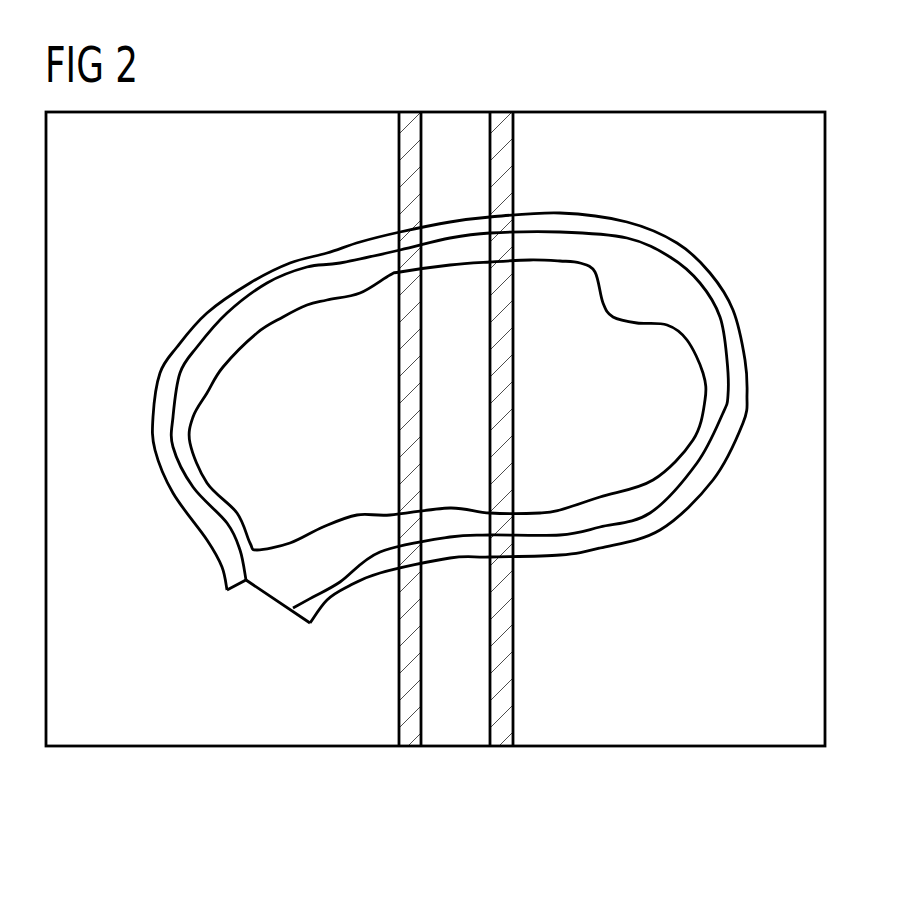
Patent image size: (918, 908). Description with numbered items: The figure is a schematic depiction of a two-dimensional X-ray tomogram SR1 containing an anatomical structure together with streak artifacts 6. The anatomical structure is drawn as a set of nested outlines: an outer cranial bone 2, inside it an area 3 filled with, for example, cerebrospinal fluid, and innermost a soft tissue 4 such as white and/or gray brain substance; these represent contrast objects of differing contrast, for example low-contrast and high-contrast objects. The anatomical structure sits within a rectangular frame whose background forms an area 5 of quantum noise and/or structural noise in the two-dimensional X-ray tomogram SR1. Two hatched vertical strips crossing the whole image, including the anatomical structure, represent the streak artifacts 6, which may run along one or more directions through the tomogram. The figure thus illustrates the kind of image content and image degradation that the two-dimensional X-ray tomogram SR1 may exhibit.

The cranial bone 2 is at (627, 535).
The area filled with cerebrospinal fluid 3 is at (647, 267).
The soft tissue 4 is at (562, 490).
The area of quantum noise and/or structural noise 5 is at (761, 730).
The streak artifacts 6 is at (410, 747).
The two-dimensional X-ray tomogram SR1 is at (168, 785).